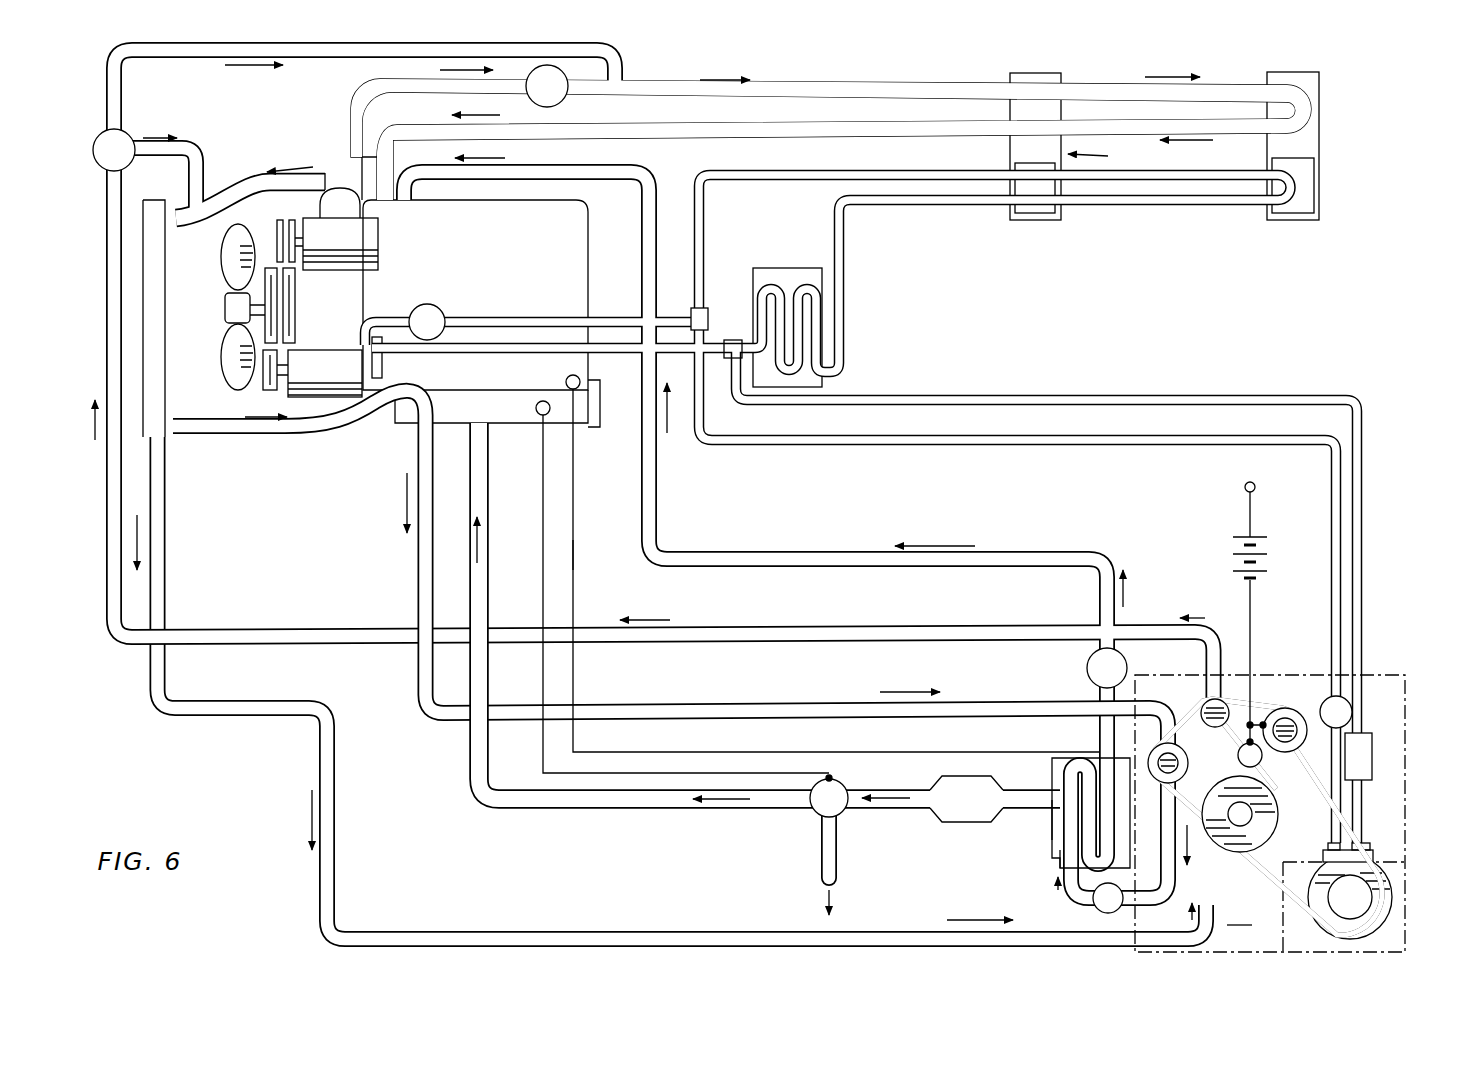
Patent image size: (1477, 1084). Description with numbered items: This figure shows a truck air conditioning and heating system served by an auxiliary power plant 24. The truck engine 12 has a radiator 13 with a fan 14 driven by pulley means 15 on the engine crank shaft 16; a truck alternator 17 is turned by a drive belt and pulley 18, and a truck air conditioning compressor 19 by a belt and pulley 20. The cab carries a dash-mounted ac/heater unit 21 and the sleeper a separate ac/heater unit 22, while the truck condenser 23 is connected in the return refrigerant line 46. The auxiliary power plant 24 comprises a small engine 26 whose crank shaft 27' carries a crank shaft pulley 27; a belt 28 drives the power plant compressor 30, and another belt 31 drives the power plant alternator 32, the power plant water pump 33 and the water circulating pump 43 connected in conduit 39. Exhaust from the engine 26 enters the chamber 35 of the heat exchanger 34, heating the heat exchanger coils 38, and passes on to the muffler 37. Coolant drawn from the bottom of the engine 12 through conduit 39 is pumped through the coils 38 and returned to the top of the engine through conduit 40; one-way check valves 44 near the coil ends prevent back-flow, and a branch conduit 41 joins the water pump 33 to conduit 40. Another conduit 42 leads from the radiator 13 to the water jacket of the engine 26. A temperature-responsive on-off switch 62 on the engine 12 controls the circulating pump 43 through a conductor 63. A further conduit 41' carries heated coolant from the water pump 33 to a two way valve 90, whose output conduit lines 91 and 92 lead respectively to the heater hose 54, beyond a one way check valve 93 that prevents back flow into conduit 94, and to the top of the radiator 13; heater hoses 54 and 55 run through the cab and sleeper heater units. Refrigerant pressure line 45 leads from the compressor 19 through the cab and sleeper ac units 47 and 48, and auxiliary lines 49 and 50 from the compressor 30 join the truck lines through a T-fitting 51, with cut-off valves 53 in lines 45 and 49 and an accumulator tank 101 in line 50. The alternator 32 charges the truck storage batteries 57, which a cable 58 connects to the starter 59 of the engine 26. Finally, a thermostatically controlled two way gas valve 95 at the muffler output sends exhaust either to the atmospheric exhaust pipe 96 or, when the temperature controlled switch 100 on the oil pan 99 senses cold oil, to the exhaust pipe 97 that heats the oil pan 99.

The truck engine 12 is at (495, 258).
The radiator 13 is at (146, 326).
The fan 14 is at (226, 259).
The pulley means 15 is at (238, 352).
The engine crank shaft 16 is at (300, 313).
The truck alternator 17 is at (343, 218).
The drive belt and pulley 18 is at (278, 218).
The truck air conditioning compressor 19 is at (333, 398).
The belt and pulley 20 is at (262, 387).
The ac/heater unit 21 is at (1103, 157).
The ac/heater unit 22 is at (1325, 150).
The truck air conditioning condenser 23 is at (825, 377).
The auxiliary power plant 24 is at (1405, 675).
The small engine 26 is at (1240, 910).
The crank shaft pulley 27 is at (1236, 796).
The crank shaft 27' is at (1270, 832).
The belt 28 is at (1267, 881).
The power plant compressor 30 is at (1410, 869).
The belt 31 is at (1266, 714).
The power plant alternator 32 is at (1303, 749).
The power plant water pump 33 is at (1201, 705).
The power plant heat exchanger 34 is at (1043, 763).
The chamber 35 is at (1052, 821).
The muffler 37 is at (936, 782).
The heat exchanger coils 38 is at (1060, 857).
The conduit 39 is at (418, 561).
The conduit 40 is at (770, 554).
The branch conduit 41 is at (1067, 720).
The conduit 41' is at (635, 425).
The conduit 42 is at (167, 590).
The water circulating pump 43 is at (1161, 781).
The one-way check valves 44 is at (1087, 670).
The air conditioning pressure line 45 is at (800, 182).
The return refrigerant line 46 is at (1192, 208).
The ac unit 47 is at (1050, 222).
The ac unit 48 is at (1306, 196).
The auxiliary air conditioning pressure line 49 is at (1105, 446).
The return refrigerant line 50 is at (1114, 398).
The T-fitting 51 is at (706, 316).
The cut-off valves 53 is at (440, 316).
The heater hose 54 is at (854, 93).
The heater hose 55 is at (990, 128).
The truck storage batteries 57 is at (1267, 556).
The cable 58 is at (1246, 606).
The starter 59 is at (1263, 760).
The temperature-responsive on-off switch 62 is at (566, 383).
The conductor 63 is at (576, 557).
The two way valve 90 is at (100, 140).
The output conduit line 91 is at (205, 52).
The output conduit line 92 is at (184, 142).
The one way check valve 93 is at (560, 99).
The conduit 94 is at (398, 88).
The two way gas valve 95 is at (815, 811).
The exhaust pipe 96 is at (838, 857).
The exhaust pipe 97 is at (664, 810).
The oil pan 99 is at (594, 432).
The temperature controlled switch 100 is at (536, 403).
The accumulator tank 101 is at (1374, 762).